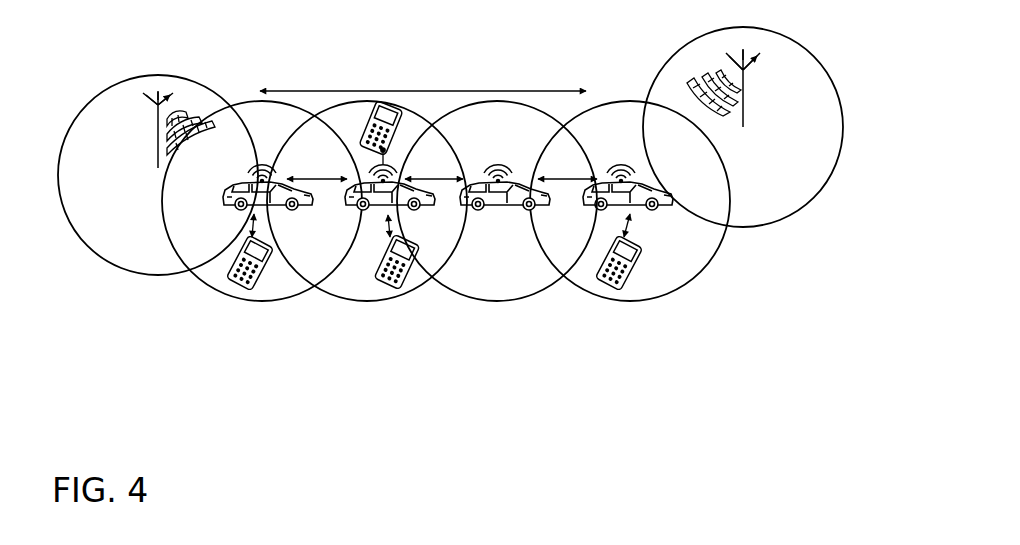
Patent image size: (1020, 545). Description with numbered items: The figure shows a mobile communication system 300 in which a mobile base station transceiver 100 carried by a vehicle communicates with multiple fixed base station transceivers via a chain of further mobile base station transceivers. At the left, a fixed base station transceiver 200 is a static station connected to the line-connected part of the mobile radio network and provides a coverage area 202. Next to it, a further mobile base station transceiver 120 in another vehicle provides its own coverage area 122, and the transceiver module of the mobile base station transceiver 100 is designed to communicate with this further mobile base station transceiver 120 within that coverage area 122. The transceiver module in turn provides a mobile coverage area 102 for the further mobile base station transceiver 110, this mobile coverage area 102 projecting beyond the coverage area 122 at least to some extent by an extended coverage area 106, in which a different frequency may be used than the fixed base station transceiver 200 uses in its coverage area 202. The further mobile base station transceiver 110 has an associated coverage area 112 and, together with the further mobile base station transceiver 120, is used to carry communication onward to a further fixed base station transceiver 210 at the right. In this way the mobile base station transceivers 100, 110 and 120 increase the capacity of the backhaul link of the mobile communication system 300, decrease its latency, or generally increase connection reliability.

The mobile base station transceiver 100 is at (373, 202).
The mobile coverage area 102 is at (398, 295).
The extended coverage area 106 is at (412, 130).
The further mobile base station transceiver 110 is at (503, 203).
The coverage area of further mobile base station transceiver 112 is at (535, 294).
The further mobile base station transceiver 120 is at (248, 203).
The coverage area 122 is at (297, 295).
The fixed base station transceiver 200 is at (158, 152).
The coverage area 202 is at (162, 274).
The further fixed base station transceiver 210 is at (743, 117).
The mobile communication system 300 is at (465, 392).